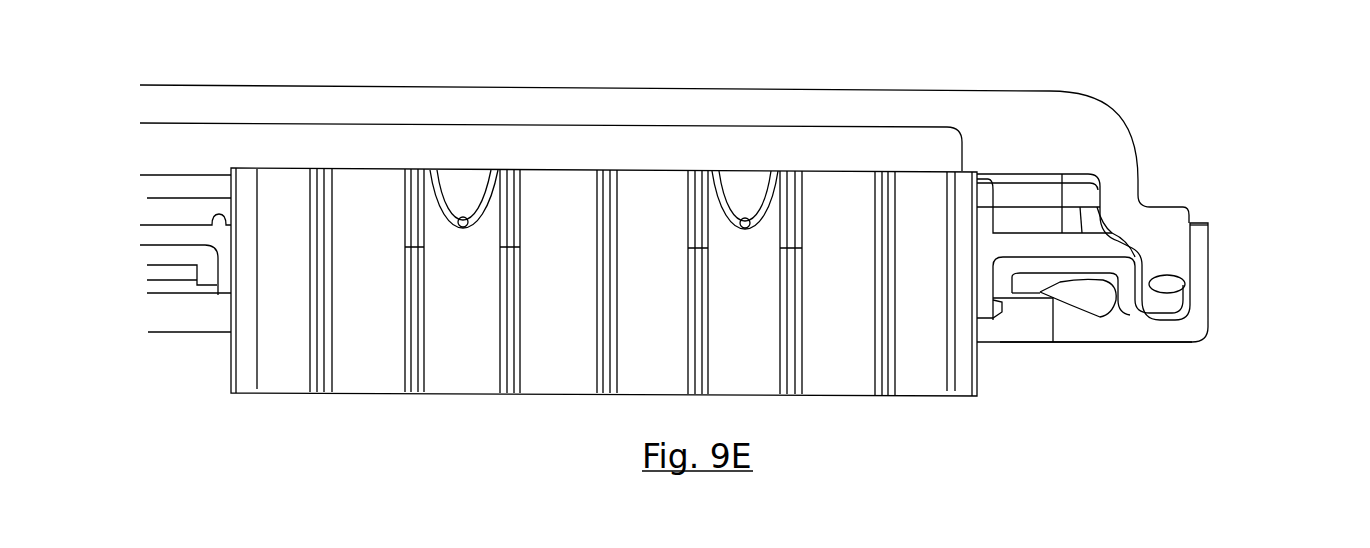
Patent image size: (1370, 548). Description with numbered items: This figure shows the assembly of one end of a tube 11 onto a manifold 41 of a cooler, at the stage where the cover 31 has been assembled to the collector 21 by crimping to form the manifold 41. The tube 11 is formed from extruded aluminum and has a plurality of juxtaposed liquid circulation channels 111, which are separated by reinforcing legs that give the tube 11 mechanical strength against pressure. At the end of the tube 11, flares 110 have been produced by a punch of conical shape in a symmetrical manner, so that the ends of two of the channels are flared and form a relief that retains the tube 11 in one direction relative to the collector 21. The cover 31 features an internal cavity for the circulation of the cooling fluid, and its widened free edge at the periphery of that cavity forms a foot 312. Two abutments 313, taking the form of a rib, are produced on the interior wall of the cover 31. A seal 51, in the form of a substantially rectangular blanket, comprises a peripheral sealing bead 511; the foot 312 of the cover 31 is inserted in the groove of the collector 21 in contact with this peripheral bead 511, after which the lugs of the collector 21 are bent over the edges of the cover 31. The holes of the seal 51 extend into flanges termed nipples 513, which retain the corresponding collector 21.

The tube 11 is at (228, 382).
The flares 110 is at (468, 187).
The liquid circulation channels 111 is at (455, 388).
The nipples 513 is at (218, 301).
The cover 31 is at (1129, 126).
The abutments 313 is at (970, 169).
The manifold 41 is at (1209, 192).
The foot 312 is at (1175, 247).
The peripheral sealing bead 511 is at (1174, 299).
The seal 51 is at (1067, 252).
The collector 21 is at (1178, 334).